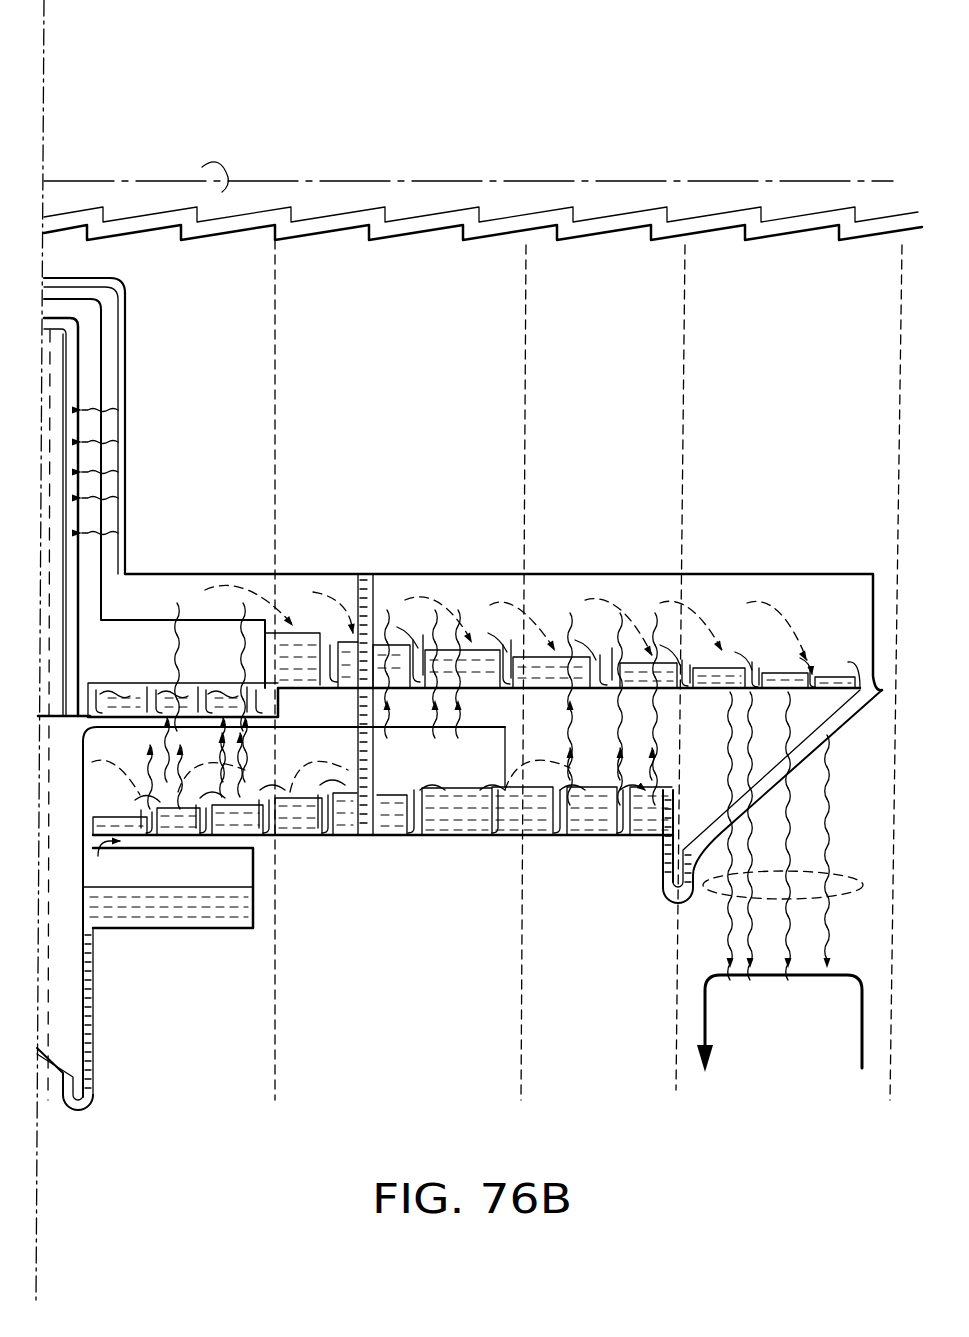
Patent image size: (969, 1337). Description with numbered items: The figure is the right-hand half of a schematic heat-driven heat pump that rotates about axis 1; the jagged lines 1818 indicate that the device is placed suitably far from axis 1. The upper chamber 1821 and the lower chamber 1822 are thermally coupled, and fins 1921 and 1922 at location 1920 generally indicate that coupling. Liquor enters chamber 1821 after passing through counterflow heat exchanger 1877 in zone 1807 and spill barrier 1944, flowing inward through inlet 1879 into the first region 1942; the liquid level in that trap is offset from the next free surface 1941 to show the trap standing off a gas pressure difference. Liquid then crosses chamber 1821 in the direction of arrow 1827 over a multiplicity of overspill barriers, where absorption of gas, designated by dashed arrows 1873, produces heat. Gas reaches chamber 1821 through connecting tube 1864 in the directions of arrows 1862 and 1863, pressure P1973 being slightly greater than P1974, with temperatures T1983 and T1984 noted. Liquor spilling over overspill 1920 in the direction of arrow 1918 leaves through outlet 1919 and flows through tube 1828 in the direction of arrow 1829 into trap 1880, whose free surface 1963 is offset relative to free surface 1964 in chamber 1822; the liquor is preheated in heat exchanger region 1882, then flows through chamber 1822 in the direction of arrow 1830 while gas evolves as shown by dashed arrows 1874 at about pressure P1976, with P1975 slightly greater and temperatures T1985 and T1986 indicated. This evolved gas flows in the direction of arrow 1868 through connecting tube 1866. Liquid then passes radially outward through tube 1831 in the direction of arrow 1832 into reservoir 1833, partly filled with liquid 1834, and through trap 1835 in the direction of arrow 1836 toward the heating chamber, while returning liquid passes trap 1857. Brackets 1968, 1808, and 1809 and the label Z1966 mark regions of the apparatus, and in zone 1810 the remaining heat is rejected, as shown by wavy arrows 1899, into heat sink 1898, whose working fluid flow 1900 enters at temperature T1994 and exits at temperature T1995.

The axis 1 is at (136, 181).
The jagged lines 1818 is at (223, 231).
The connecting tube 1864 is at (126, 305).
The arrow 1862 is at (136, 340).
The pressure P1973 is at (149, 472).
The temperature T1983 is at (193, 529).
The chamber 1821 is at (408, 502).
The overspill 1920 is at (370, 568).
The fins 1921 is at (362, 572).
The tray section 1968 is at (523, 568).
The arrow 1863 is at (618, 559).
The dashed arrows 1873 is at (614, 634).
The pressure P1974 is at (828, 541).
The temperature T1984 is at (823, 563).
The arrow 1918 is at (870, 652).
The free surface 1941 is at (280, 609).
The first tray cell 1942 is at (312, 639).
The inlet 1879 is at (266, 695).
The counterflow heat exchanger 1877 is at (120, 684).
The arrow 1868 is at (84, 620).
The connecting tube 1866 is at (81, 668).
The spill barrier 1944 is at (338, 679).
The arrow 1827 is at (556, 697).
The outlet 1919 is at (880, 705).
The free surface 1963 is at (803, 744).
The tube 1828 is at (830, 752).
The pressure P1976 is at (128, 736).
The temperature T1986 is at (128, 755).
The trap 1857 is at (330, 740).
The dashed arrows 1874 is at (85, 762).
The pressure P1975 is at (540, 731).
The temperature T1985 is at (540, 750).
The free surface 1964 is at (508, 783).
The arrow 1832 is at (112, 850).
The tube 1831 is at (85, 866).
The fins 1922 is at (343, 861).
The arrow 1830 is at (476, 850).
The heat exchanger region 1882 is at (592, 843).
The arrow 1829 is at (762, 800).
The wavy arrows 1899 is at (870, 876).
The trap 1880 is at (668, 888).
The liquid 1834 is at (197, 922).
The reservoir 1833 is at (258, 927).
The chamber 1822 is at (432, 927).
The second section 1808 is at (517, 975).
The third section 1809 is at (668, 938).
The arrow 1836 is at (105, 960).
The trap 1835 is at (95, 1088).
The zone 1807 is at (275, 1118).
The flow of working fluid 1900 is at (764, 982).
The heat sink 1898 is at (808, 1034).
The zone Z1966 is at (770, 1053).
The temperature T1995 is at (728, 1088).
The temperature T1994 is at (838, 1088).
The zone 1810 is at (883, 1088).